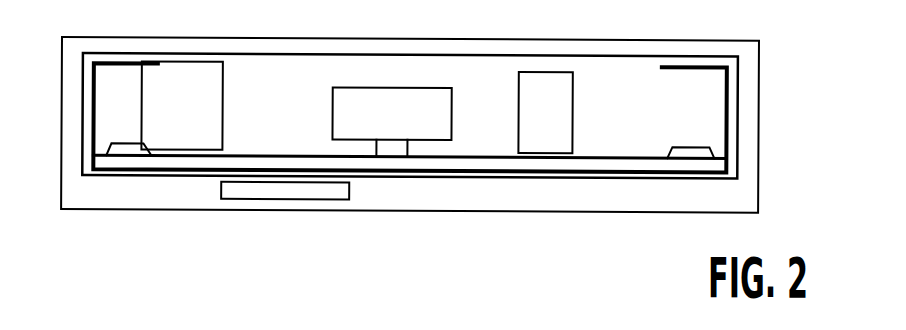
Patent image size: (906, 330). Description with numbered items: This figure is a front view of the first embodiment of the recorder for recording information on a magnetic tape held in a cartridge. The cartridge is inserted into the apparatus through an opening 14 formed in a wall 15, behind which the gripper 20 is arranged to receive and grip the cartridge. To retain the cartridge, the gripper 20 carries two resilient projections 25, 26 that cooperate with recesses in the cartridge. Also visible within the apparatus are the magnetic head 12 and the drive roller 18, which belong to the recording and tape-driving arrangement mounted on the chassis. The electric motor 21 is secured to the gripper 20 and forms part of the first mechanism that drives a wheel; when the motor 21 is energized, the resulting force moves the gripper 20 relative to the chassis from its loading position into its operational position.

The magnetic head 12 is at (573, 97).
The opening 14 is at (631, 75).
The wall 15 is at (748, 86).
The drive roller 18 is at (452, 97).
The gripper 20 is at (641, 152).
The electric motor 21 is at (223, 96).
The resilient projection 25 is at (115, 143).
The resilient projection 26 is at (695, 144).